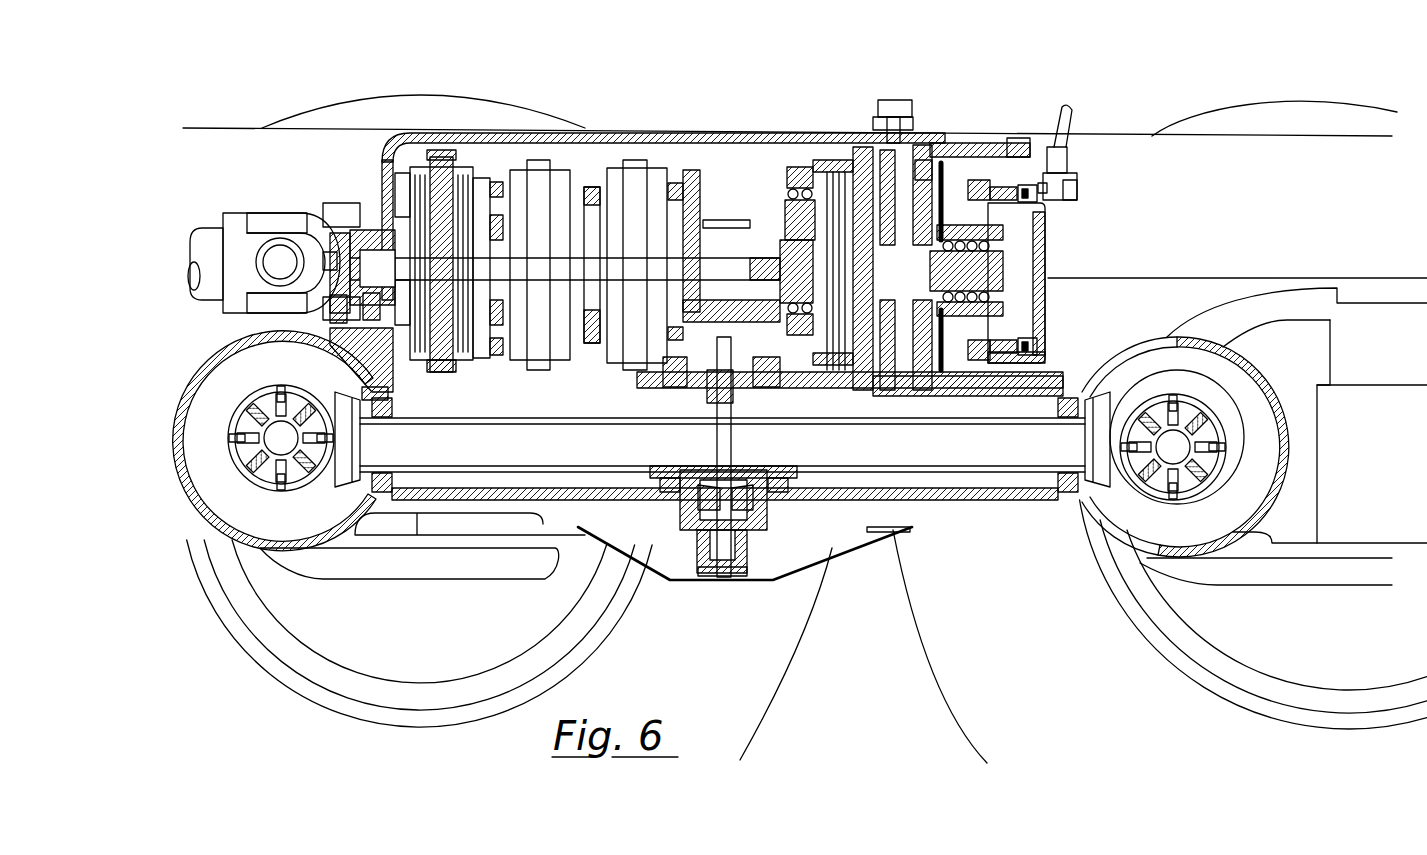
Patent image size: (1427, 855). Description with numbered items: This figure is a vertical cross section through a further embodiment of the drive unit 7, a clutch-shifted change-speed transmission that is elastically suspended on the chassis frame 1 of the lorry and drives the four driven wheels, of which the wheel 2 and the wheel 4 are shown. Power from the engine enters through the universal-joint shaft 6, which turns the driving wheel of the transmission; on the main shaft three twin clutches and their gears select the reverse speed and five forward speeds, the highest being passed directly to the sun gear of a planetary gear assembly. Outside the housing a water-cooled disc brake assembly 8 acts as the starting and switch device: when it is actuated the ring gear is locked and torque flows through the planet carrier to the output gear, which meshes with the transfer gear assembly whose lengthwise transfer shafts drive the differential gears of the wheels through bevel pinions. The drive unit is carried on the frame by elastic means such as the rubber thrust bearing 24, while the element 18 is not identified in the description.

The chassis frame 1 is at (1117, 137).
The driven wheel 2 is at (798, 613).
The driven wheel 4 is at (947, 637).
The universal-joint shaft 6 is at (233, 240).
The drive unit 7 is at (410, 155).
The brake assembly 8 is at (1000, 178).
The frame cross member 18 is at (1353, 532).
The rubber thrust bearing 24 is at (1373, 278).